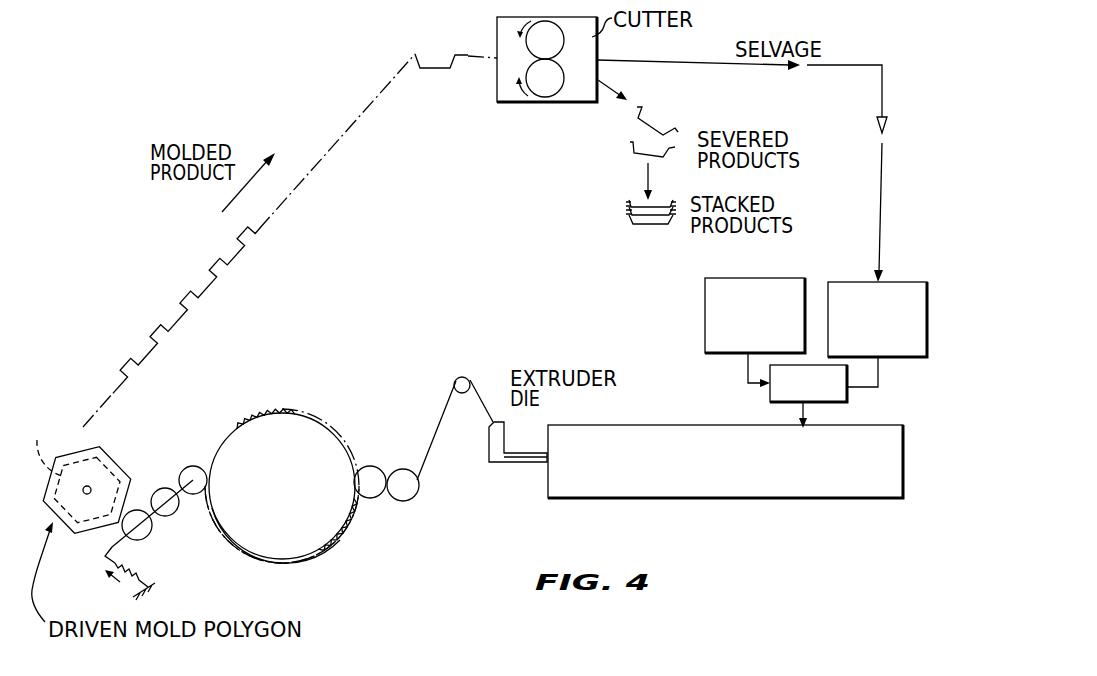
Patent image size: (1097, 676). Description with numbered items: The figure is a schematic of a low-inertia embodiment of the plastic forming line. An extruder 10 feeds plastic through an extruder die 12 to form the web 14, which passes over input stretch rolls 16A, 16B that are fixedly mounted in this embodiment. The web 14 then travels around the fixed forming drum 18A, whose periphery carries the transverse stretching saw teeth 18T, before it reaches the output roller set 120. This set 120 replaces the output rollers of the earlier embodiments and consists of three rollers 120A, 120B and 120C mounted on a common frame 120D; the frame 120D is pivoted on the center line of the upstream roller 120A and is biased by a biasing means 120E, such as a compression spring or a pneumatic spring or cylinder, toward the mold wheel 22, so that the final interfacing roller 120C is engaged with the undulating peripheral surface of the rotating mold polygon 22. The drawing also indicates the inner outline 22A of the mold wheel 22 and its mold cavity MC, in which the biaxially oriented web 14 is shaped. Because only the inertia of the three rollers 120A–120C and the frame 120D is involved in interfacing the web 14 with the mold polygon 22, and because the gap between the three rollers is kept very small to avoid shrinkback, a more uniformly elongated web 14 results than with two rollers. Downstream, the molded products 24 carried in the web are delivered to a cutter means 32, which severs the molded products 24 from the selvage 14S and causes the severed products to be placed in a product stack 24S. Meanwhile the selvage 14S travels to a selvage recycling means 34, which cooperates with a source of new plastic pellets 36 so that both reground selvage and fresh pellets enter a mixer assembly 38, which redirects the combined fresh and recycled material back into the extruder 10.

The extruder 10 is at (588, 462).
The extruder die 12 is at (483, 457).
The web 14 is at (448, 403).
The selvage 14S is at (873, 65).
The feed roller 16A is at (407, 495).
The feed roller 16B is at (367, 494).
The forming drum 18A is at (302, 475).
The drum teeth 18T is at (334, 556).
The mold wheel 22 is at (83, 472).
The mold polygon inner outline 22A is at (62, 452).
The mold cavity MC is at (44, 452).
The molded products 24 is at (621, 153).
The product stack 24S is at (623, 217).
The cutter means 32 is at (472, 23).
The selvage recycling means 34 is at (940, 272).
The new plastic pellets 36 is at (705, 313).
The mixer assembly 38 is at (773, 402).
The output roller set 120 is at (153, 448).
The upstream roller 120A is at (200, 493).
The roller 120B is at (165, 488).
The interfacing roller 120C is at (122, 522).
The common frame 120D is at (113, 552).
The biasing means 120E is at (118, 583).